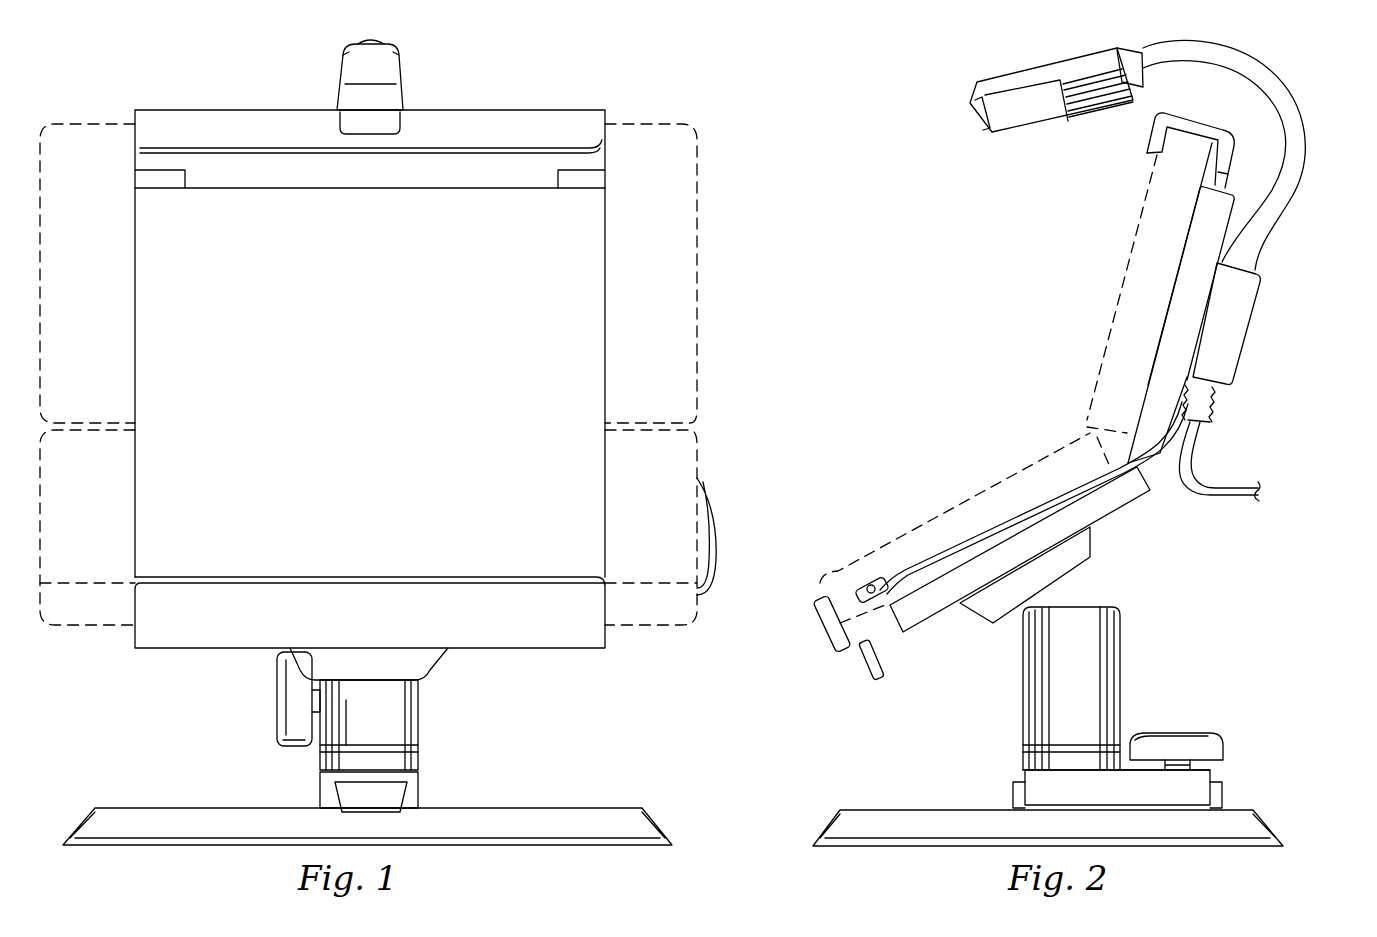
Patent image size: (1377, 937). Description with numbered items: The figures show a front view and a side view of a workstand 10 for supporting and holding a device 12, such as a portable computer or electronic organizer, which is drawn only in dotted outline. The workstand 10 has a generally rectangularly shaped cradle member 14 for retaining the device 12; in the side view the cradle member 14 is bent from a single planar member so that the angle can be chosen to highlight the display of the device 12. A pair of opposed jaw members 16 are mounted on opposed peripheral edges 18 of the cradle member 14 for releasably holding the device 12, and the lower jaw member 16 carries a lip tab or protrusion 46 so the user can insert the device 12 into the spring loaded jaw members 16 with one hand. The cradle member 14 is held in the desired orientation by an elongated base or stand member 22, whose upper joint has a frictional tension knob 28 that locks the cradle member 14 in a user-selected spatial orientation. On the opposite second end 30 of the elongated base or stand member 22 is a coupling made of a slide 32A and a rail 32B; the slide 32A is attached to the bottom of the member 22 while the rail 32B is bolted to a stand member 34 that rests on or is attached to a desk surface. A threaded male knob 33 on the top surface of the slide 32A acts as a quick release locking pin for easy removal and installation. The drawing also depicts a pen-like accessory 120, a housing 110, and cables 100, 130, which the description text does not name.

In FIG. 2, the workstand 10 is at (1042, 252).
In FIG. 1, the device 12 is at (703, 522).
In FIG. 2, the device 12 is at (884, 540).
In FIG. 1, the cradle member 14 is at (607, 288).
In FIG. 1, the jaw members 16 is at (492, 106).
In FIG. 2, the jaw members 16 is at (775, 652).
In FIG. 2, the peripheral edges 18 is at (1237, 194).
In FIG. 1, the elongated base or stand member 22 is at (422, 721).
In FIG. 2, the elongated base or stand member 22 is at (1126, 660).
In FIG. 1, the frictional tension knob 28 is at (272, 708).
In FIG. 1, the second end 30 is at (422, 757).
In FIG. 2, the second end 30 is at (1022, 746).
In FIG. 1, the slide 32A is at (318, 785).
In FIG. 1, the rail 32B is at (406, 792).
In FIG. 2, the rail 32B is at (1013, 790).
In FIG. 2, the threaded male knob 33 is at (1216, 730).
In FIG. 1, the stand member 34 is at (600, 806).
In FIG. 2, the stand member 34 is at (901, 808).
In FIG. 1, the lip tab or protrusion 46 is at (448, 660).
In FIG. 2, the lip tab or protrusion 46 is at (867, 676).
In FIG. 2, the cable 100 is at (1226, 490).
In FIG. 2, the connector housing 110 is at (1226, 330).
In FIG. 1, the stylus/pen 120 is at (336, 76).
In FIG. 2, the stylus/pen 120 is at (1058, 124).
In FIG. 2, the stylus cable 130 is at (1132, 482).